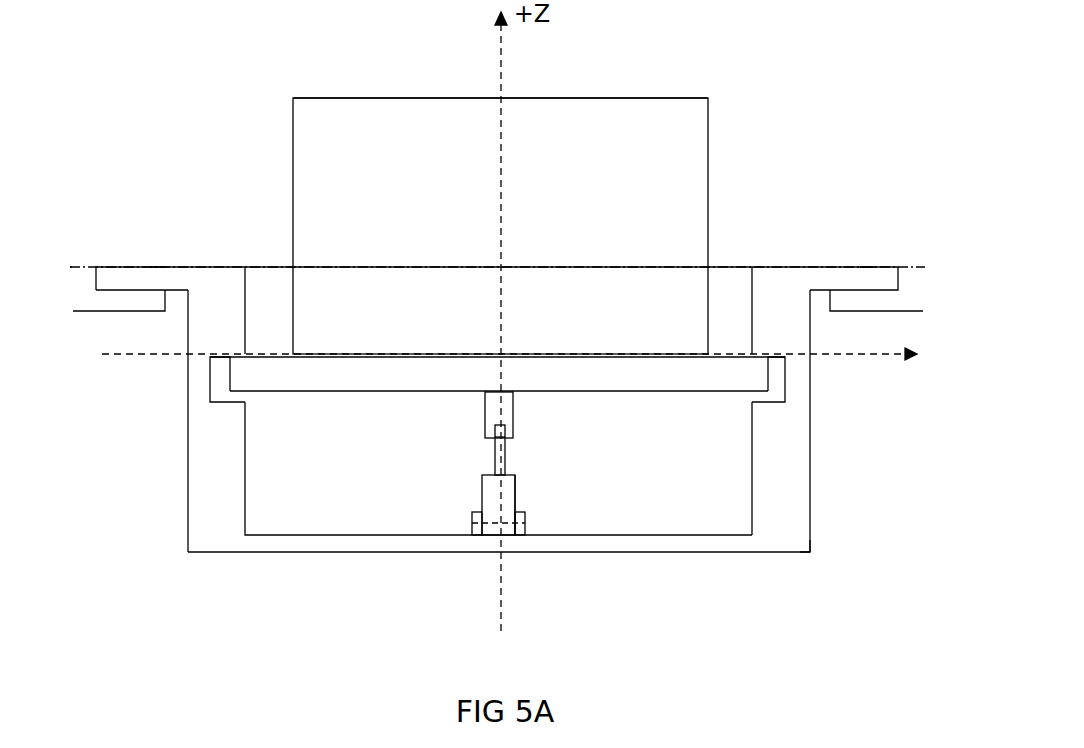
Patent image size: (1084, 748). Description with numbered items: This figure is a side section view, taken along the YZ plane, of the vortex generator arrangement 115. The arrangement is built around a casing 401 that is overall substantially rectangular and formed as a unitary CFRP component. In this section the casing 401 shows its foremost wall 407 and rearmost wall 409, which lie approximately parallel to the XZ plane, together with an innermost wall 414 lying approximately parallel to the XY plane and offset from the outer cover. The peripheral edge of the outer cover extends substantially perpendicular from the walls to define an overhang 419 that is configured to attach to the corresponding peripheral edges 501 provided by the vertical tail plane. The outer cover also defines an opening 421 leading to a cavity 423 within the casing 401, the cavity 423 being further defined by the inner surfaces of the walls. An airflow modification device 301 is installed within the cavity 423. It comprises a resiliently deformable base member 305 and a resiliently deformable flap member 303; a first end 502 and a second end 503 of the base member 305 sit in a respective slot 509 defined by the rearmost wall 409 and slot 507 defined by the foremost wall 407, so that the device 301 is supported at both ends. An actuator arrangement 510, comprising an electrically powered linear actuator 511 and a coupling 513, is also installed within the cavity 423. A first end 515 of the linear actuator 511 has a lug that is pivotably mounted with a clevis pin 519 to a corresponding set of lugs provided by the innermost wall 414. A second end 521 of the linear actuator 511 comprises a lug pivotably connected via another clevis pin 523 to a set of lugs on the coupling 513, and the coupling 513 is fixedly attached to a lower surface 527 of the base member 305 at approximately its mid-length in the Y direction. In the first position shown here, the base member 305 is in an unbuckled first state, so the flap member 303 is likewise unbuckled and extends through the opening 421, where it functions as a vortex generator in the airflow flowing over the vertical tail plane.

The vortex generator arrangement 115 is at (728, 75).
The airflow modification device 301 is at (278, 168).
The resiliently deformable flap member 303 is at (420, 213).
The resiliently deformable base member 305 is at (595, 370).
The opening 421 is at (487, 263).
The overhang 419 is at (157, 275).
The peripheral edges 501 is at (82, 275).
The first end 502 is at (252, 368).
The slot 509 is at (220, 379).
The slot 507 is at (778, 375).
The clevis pin 523 is at (513, 438).
The lower surface 527 is at (548, 392).
The second end 503 is at (755, 382).
The cavity 423 is at (710, 457).
The foremost wall 407 is at (808, 507).
The rearmost wall 409 is at (192, 487).
The innermost wall 414 is at (227, 553).
The casing 401 is at (798, 545).
The coupling 513 is at (493, 405).
The second end 521 is at (495, 437).
The actuator arrangement 510 is at (470, 512).
The first end 515 is at (472, 533).
The clevis pin 519 is at (515, 535).
The linear actuator 511 is at (517, 492).